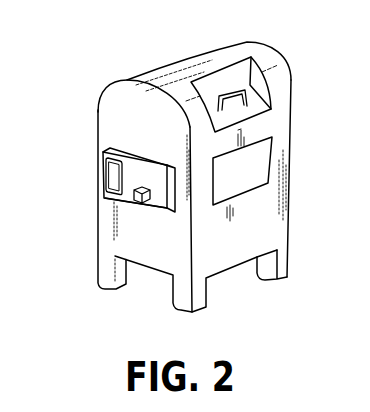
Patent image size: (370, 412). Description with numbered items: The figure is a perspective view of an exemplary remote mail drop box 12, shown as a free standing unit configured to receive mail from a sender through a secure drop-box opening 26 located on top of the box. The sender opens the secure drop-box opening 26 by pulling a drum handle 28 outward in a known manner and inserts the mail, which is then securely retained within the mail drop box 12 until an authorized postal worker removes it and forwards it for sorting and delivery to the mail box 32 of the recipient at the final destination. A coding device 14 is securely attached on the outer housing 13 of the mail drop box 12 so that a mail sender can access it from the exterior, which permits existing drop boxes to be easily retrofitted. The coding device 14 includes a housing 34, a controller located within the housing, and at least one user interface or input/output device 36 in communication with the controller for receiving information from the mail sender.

The mail drop box 12 is at (89, 234).
The outer housing 13 is at (106, 93).
The coding device 14 is at (91, 177).
The secure drop-box opening 26 is at (240, 91).
The drum handle 28 is at (225, 87).
The mail box 32 is at (140, 203).
The housing 34 is at (122, 207).
The user interface or input/output device 36 is at (106, 158).